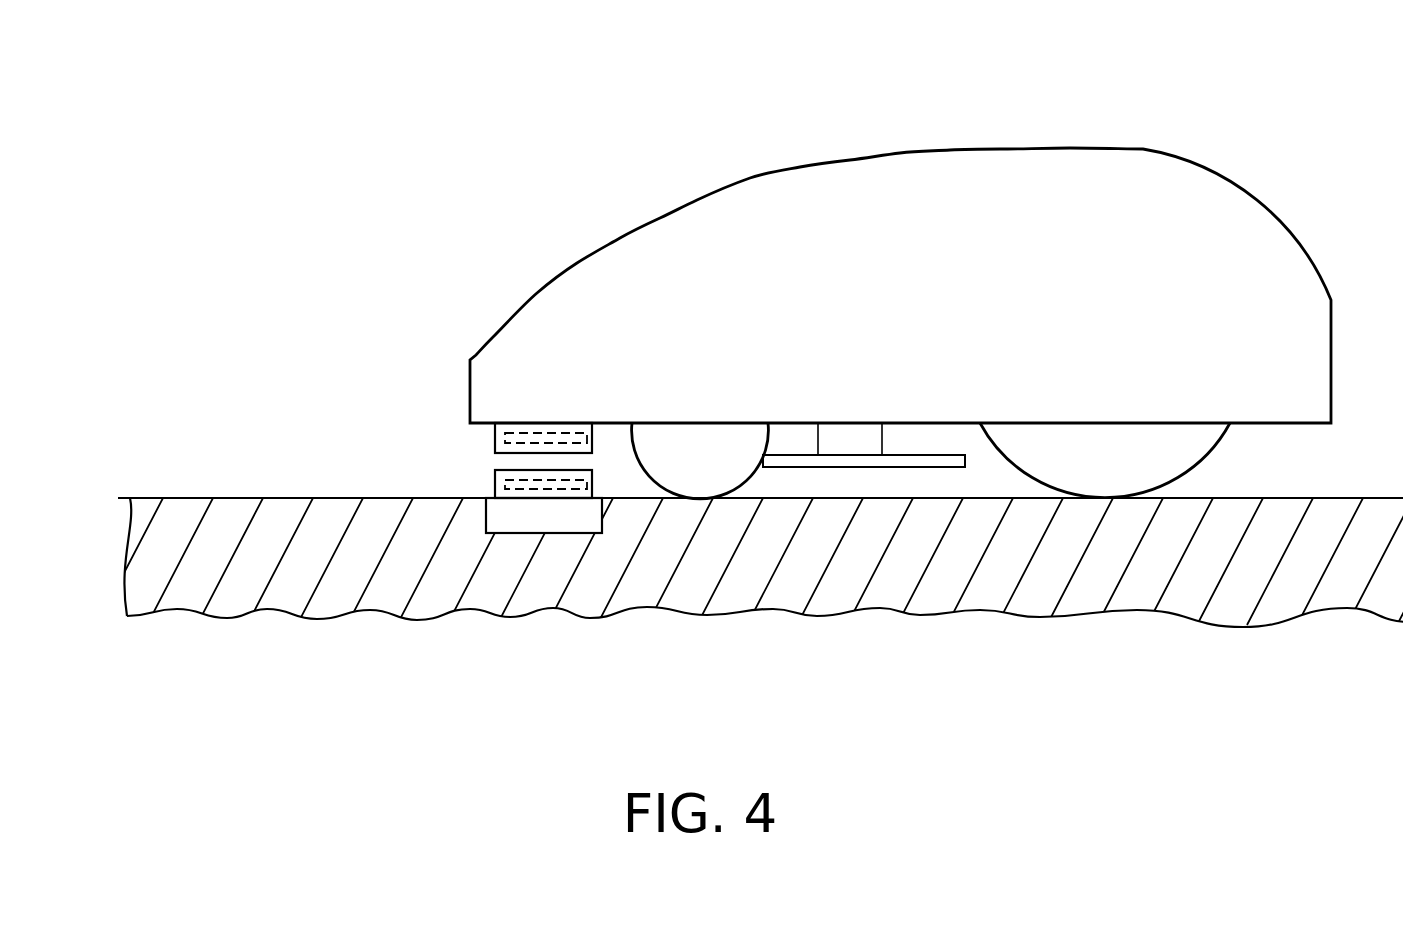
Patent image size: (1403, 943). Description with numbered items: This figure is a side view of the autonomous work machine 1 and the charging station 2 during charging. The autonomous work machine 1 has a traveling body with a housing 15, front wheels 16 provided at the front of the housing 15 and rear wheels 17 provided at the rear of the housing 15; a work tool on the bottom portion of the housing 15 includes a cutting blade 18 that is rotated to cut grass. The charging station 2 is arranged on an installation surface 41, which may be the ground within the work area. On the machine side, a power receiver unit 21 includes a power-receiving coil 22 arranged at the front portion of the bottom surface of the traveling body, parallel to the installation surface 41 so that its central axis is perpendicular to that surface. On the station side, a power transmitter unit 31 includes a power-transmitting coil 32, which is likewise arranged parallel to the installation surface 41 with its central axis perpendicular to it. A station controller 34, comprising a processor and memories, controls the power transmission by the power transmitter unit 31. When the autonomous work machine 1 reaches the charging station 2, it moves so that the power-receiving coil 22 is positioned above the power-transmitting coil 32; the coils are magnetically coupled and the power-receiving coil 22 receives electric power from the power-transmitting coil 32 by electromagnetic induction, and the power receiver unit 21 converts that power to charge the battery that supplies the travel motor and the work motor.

The autonomous work machine 1 is at (891, 370).
The charging station 2 is at (478, 536).
The housing 15 is at (870, 212).
The front wheels 16 is at (703, 460).
The rear wheels 17 is at (1098, 460).
The cutting blade 18 is at (845, 462).
The power receiver unit 21 is at (518, 430).
The power-receiving coil 22 is at (557, 435).
The power transmitter unit 31 is at (568, 492).
The power-transmitting coil 32 is at (522, 488).
The station controller 34 is at (492, 516).
The installation surface 41 is at (170, 496).